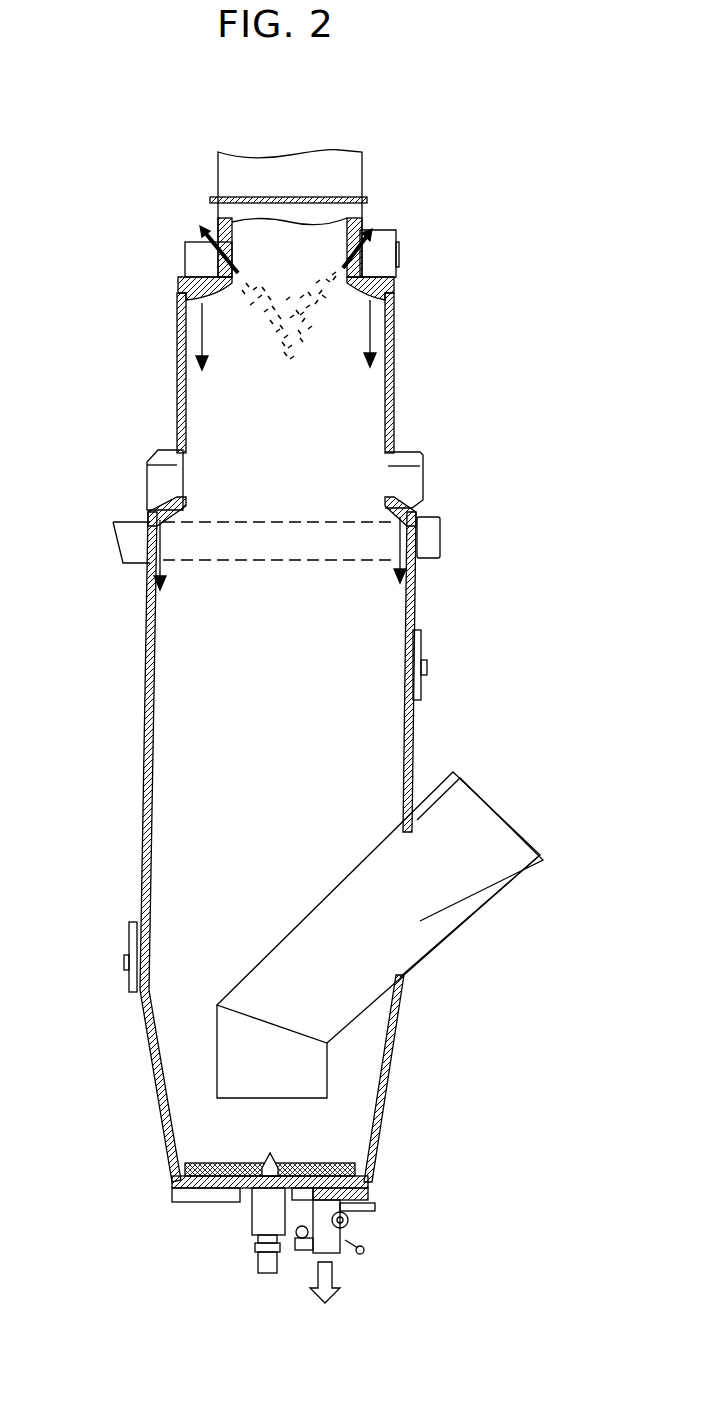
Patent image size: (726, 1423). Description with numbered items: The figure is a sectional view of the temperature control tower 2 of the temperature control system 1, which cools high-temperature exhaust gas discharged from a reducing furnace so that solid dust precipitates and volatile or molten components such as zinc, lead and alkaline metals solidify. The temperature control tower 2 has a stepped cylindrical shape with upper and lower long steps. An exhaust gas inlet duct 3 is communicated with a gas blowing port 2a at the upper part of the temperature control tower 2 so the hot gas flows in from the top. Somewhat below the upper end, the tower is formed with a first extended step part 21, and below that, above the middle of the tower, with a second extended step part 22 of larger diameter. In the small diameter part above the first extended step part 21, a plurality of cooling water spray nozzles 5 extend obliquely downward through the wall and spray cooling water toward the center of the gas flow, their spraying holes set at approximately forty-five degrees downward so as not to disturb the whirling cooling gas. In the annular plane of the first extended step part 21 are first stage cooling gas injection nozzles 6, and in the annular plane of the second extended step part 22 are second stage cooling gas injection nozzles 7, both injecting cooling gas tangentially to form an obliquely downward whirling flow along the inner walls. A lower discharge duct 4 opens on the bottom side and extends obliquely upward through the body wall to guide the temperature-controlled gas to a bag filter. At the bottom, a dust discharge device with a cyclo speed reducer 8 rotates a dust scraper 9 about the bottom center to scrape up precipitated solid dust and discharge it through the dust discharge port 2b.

The temperature control system 1 is at (344, 715).
The temperature control tower 2 is at (143, 737).
The gas blowing port 2a is at (282, 240).
The dust discharge port 2b is at (368, 1187).
The exhaust gas inlet duct 3 is at (363, 172).
The lower discharge duct 4 is at (487, 905).
The cooling water spray nozzles 5 is at (200, 228).
The first stage cooling gas injection nozzles 6 is at (180, 292).
The second stage cooling gas injection nozzles 7 is at (113, 524).
The cyclo speed reducer 8 is at (250, 1210).
The dust scraper 9 is at (220, 1163).
The first extended step part 21 is at (183, 262).
The second extended step part 22 is at (147, 487).